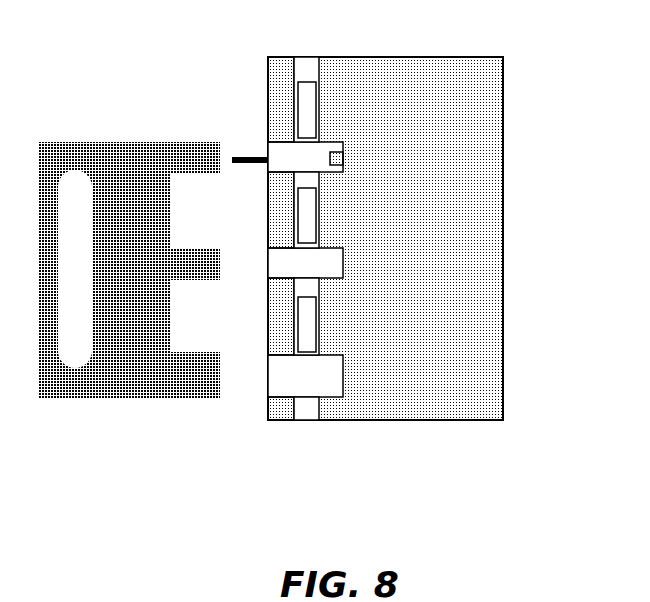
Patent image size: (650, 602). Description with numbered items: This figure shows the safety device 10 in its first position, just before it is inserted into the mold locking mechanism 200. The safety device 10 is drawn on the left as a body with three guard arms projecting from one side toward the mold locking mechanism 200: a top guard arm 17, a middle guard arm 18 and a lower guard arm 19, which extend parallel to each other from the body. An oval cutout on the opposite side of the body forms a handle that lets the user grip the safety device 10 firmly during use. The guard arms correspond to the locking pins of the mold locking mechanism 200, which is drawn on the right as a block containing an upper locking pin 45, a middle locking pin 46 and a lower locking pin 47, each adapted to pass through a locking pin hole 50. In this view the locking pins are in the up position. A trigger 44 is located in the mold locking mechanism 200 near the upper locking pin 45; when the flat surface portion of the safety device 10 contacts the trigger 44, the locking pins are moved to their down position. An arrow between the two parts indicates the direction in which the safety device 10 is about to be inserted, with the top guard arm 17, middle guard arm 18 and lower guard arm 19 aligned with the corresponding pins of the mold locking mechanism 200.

The safety device 10 is at (83, 410).
The top guard arm 17 is at (193, 142).
The middle guard arm 18 is at (199, 281).
The lower guard arm 19 is at (180, 398).
The mold locking mechanism 200 is at (385, 246).
The trigger 44 is at (328, 157).
The upper locking pin 45 is at (308, 102).
The middle locking pin 46 is at (299, 222).
The lower locking pin 47 is at (288, 357).
The locking pin hole 50 is at (305, 427).